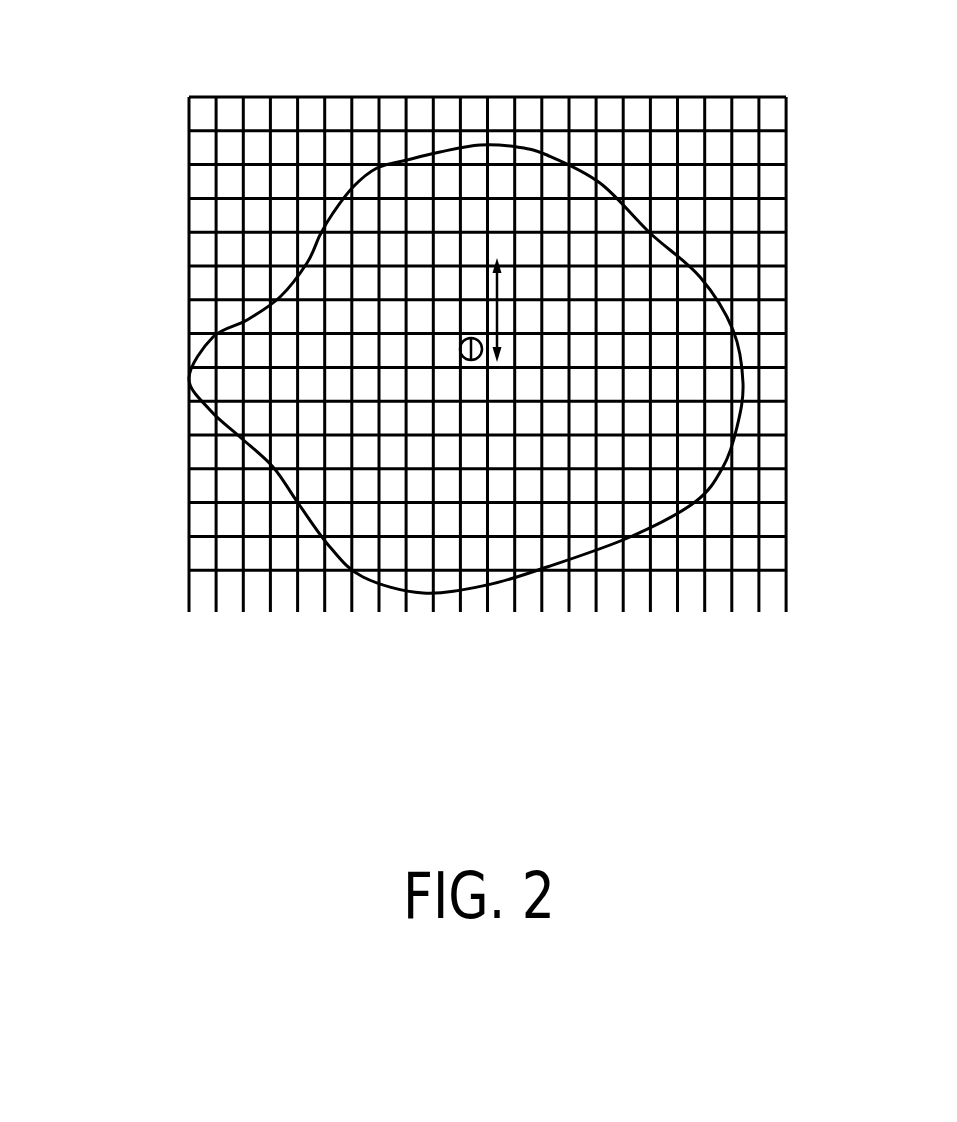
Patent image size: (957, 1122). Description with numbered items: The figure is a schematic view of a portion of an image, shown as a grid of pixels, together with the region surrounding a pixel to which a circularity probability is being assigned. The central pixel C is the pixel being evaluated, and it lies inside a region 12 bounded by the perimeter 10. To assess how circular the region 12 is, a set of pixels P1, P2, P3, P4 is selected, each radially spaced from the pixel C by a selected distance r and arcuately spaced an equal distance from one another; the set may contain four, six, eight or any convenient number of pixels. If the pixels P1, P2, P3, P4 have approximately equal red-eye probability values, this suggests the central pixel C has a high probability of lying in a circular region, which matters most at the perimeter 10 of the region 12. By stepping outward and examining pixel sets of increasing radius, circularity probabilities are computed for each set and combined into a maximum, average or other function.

The perimeter 10 is at (328, 222).
The region 12 is at (392, 175).
The central pixel C is at (472, 349).
The first pixel of the set P1 is at (470, 250).
The second pixel of the set P2 is at (556, 357).
The third pixel of the set P3 is at (470, 460).
The fourth pixel of the set P4 is at (368, 359).